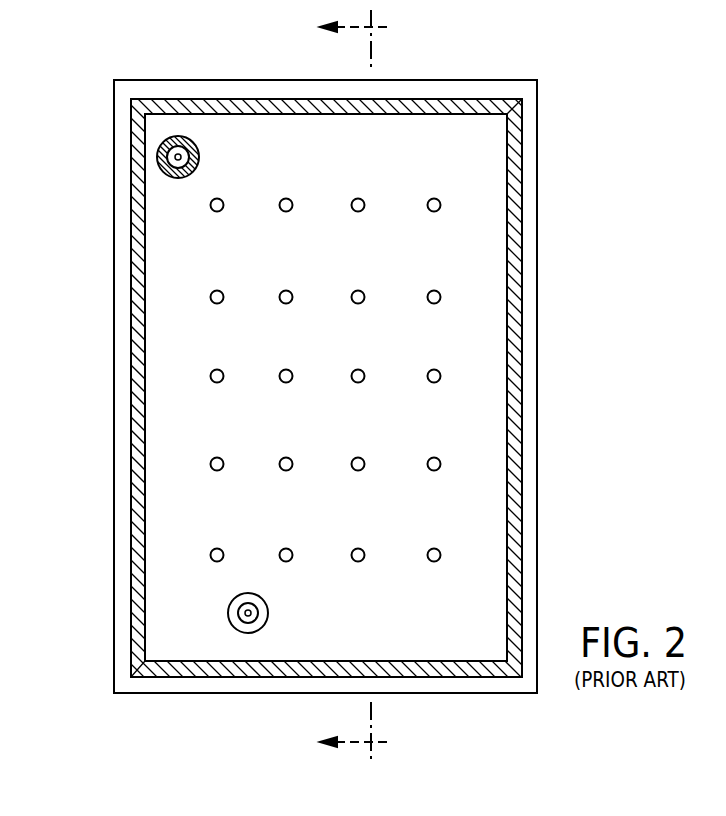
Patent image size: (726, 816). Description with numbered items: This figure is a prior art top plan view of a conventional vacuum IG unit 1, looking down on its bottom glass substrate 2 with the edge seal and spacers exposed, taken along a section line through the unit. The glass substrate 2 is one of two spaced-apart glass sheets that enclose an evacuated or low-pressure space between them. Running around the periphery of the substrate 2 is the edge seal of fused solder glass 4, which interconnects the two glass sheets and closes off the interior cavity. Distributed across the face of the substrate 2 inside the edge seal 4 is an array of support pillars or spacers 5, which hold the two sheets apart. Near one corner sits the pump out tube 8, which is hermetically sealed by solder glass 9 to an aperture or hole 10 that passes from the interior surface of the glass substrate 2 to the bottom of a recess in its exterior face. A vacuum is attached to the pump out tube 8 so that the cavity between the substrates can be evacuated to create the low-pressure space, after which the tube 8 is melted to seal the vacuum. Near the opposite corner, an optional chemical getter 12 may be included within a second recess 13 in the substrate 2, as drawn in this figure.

The plate assembly 1 is at (108, 582).
The base plate 2 is at (320, 90).
The seal frame 4 is at (237, 107).
The holes 5 is at (441, 296).
The fastening element 8 is at (157, 145).
The outer ring 9 is at (177, 178).
The pin 10 is at (175, 158).
The ring 12 is at (237, 620).
The fastening element 13 is at (263, 613).